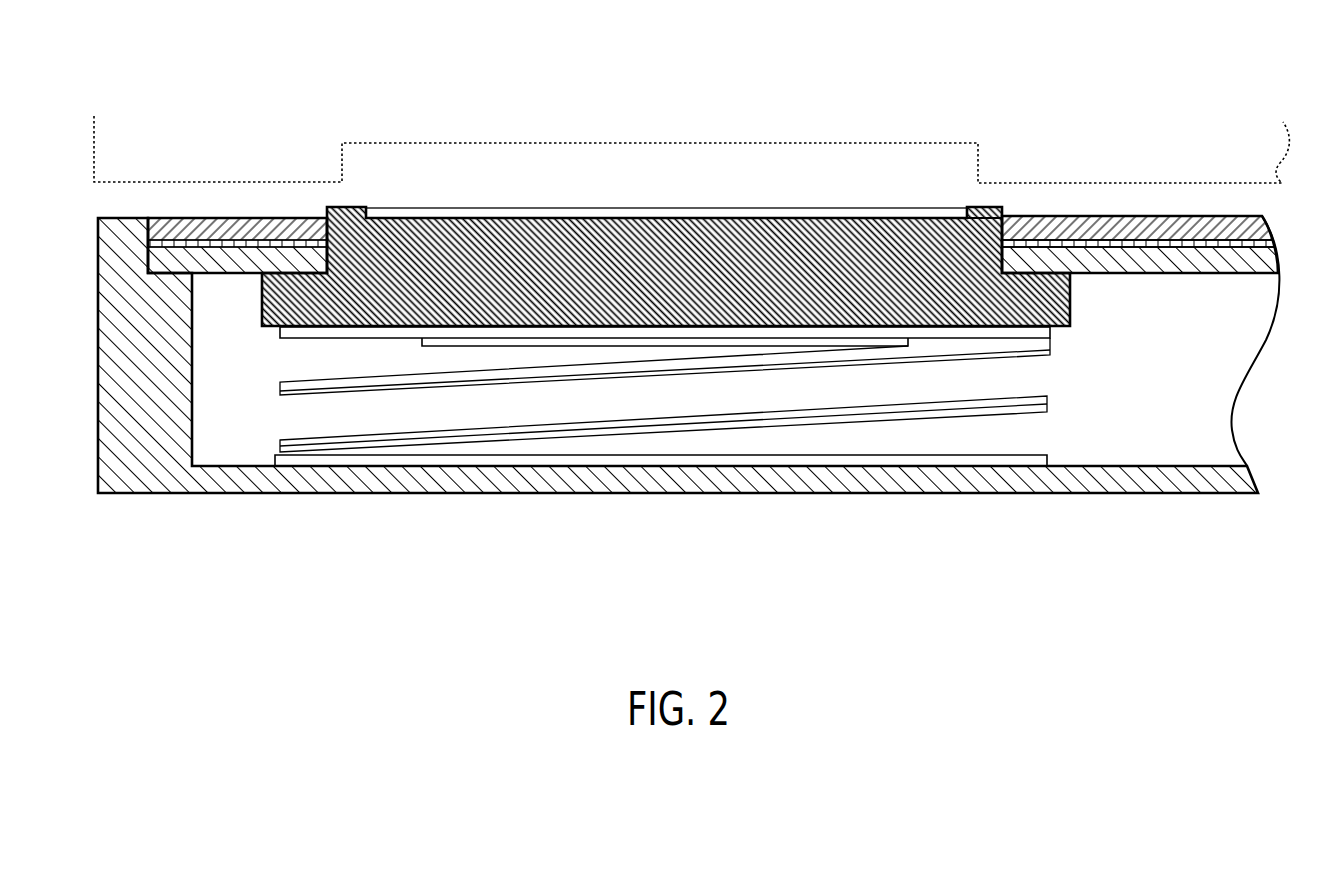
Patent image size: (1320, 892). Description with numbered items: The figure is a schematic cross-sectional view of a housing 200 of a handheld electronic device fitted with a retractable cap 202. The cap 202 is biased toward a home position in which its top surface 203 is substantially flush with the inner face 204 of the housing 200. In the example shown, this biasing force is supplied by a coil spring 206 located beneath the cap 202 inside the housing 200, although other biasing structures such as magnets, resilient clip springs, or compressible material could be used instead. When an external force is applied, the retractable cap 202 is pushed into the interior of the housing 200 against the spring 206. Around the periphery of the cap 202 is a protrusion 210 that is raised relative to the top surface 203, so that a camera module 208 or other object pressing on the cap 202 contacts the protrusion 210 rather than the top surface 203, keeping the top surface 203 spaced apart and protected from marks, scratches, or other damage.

The housing 200 is at (359, 507).
The retractable cap 202 is at (838, 238).
The top surface 203 is at (672, 218).
The inner face 204 is at (183, 218).
The coil spring 206 is at (1047, 412).
The camera module 208 is at (493, 172).
The protrusion 210 is at (988, 211).